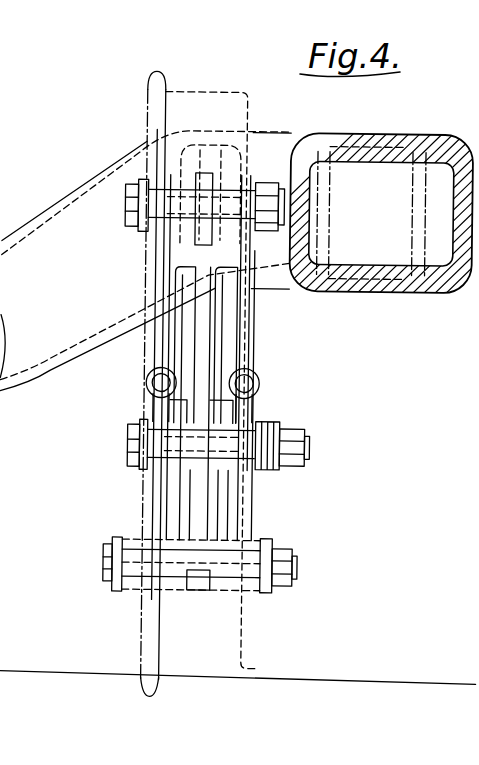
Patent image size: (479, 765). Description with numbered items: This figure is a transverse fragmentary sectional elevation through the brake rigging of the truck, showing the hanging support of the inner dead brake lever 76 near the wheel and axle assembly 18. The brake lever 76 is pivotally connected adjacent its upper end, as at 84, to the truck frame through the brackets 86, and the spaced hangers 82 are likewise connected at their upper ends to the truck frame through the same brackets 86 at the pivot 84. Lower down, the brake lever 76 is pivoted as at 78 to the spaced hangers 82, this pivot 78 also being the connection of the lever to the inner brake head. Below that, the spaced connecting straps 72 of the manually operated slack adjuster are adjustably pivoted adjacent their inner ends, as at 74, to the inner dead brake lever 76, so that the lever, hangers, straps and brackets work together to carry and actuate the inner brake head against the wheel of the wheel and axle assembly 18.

The wheel and axle assembly 18 is at (230, 648).
The connecting strap 72 is at (121, 538).
The pivot connection 74 is at (296, 585).
The inner dead brake lever 76 is at (204, 515).
The pivot connection 78 is at (268, 425).
The hanger 82 is at (246, 368).
The pivot connection 84 is at (138, 218).
The bracket 86 is at (219, 160).